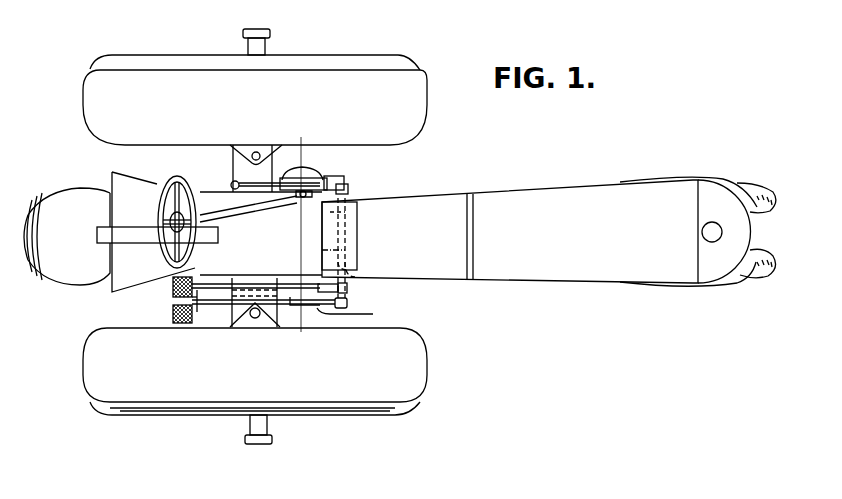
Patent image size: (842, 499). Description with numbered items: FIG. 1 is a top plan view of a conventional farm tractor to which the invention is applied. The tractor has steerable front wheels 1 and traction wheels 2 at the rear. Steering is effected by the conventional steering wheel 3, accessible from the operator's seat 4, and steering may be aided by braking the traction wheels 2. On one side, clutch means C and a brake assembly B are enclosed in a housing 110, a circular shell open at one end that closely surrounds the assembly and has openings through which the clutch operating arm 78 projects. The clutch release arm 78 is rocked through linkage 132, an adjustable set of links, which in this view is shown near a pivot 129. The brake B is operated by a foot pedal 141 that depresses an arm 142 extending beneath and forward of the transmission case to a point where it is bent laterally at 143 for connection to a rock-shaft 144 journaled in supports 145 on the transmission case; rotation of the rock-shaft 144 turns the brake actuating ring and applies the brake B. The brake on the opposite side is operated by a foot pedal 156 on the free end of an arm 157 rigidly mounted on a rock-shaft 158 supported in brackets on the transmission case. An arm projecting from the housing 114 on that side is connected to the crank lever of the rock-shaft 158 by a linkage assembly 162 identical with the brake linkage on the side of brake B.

The steerable front wheels 1 is at (741, 183).
The traction wheels 2 is at (376, 66).
The steering wheel 3 is at (163, 181).
The operator's seat 4 is at (312, 140).
The clutch operating arm 78 is at (297, 196).
The housing 110 is at (310, 168).
The housing 114 is at (262, 305).
The pivot link 129 is at (232, 183).
The linkage 132 is at (307, 195).
The foot pedal 141 is at (173, 292).
The arm 142 is at (348, 303).
The laterally bent portion 143 is at (346, 250).
The rock-shaft 144 is at (346, 212).
The supports 145 is at (340, 198).
The foot pedal 156 is at (173, 314).
The arm 157 is at (373, 314).
The rock-shaft 158 is at (348, 287).
The linkage assembly 162 is at (318, 300).
The brake assembly B is at (347, 192).
The clutch means C is at (330, 178).